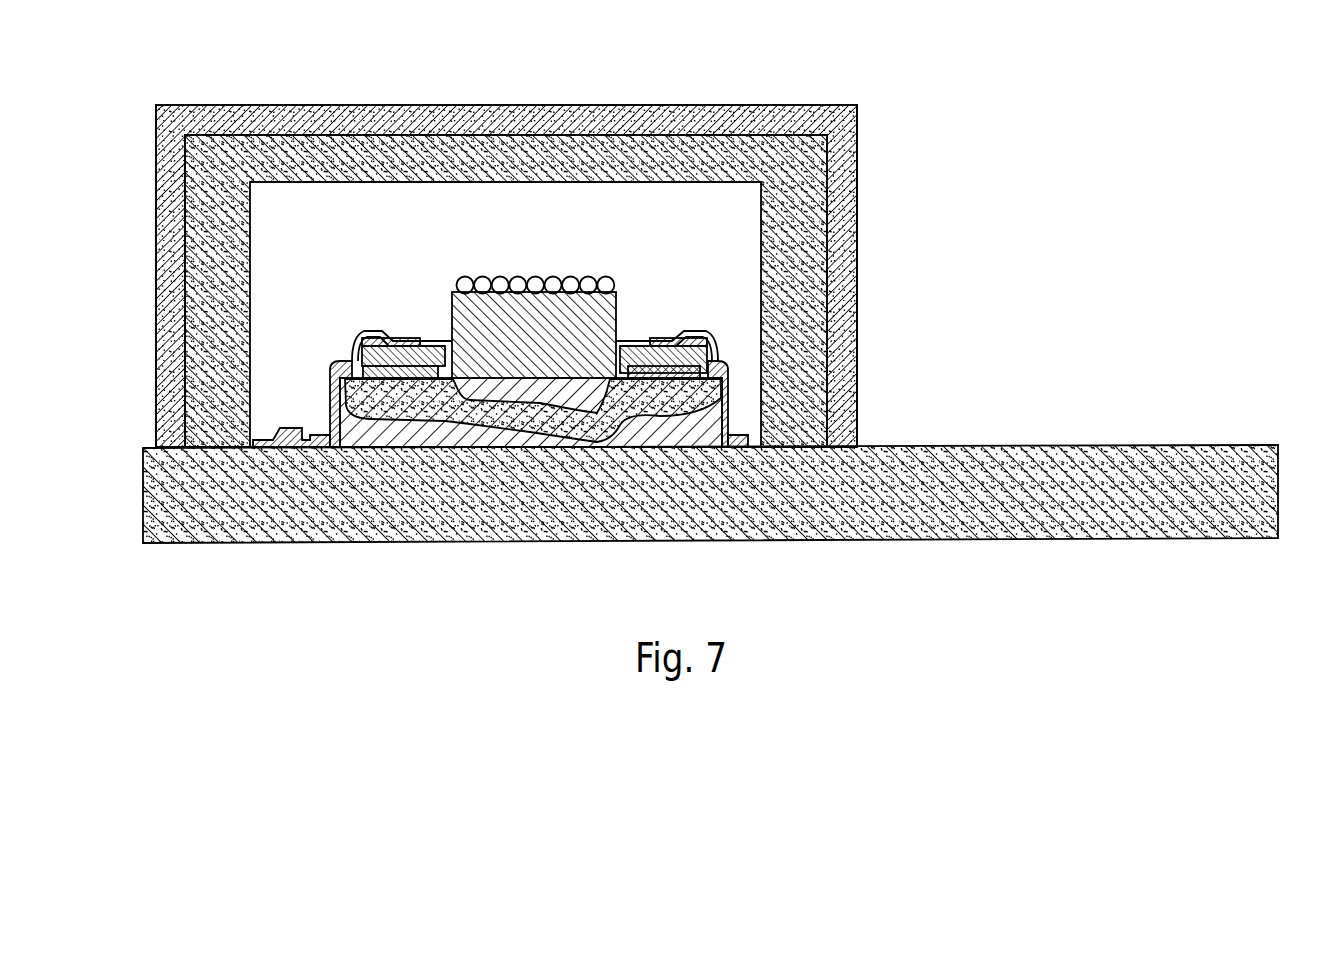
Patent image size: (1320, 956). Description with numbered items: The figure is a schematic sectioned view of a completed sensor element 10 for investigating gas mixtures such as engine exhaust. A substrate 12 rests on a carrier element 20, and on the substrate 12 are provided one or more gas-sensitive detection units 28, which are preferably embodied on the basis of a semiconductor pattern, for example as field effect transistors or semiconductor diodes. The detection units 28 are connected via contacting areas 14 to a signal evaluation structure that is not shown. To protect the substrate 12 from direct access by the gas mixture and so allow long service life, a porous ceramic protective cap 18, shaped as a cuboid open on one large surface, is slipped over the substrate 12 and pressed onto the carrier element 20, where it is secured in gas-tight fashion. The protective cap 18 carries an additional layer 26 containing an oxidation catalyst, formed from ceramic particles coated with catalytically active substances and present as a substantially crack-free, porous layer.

The sensor element 10 is at (976, 92).
The substrate 12 is at (531, 436).
The contacting areas 14 is at (324, 432).
The ceramic protective cap 18 is at (810, 253).
The carrier element 20 is at (620, 506).
The additional layer 26 is at (857, 132).
The gas-sensitive detection units 28 is at (529, 389).